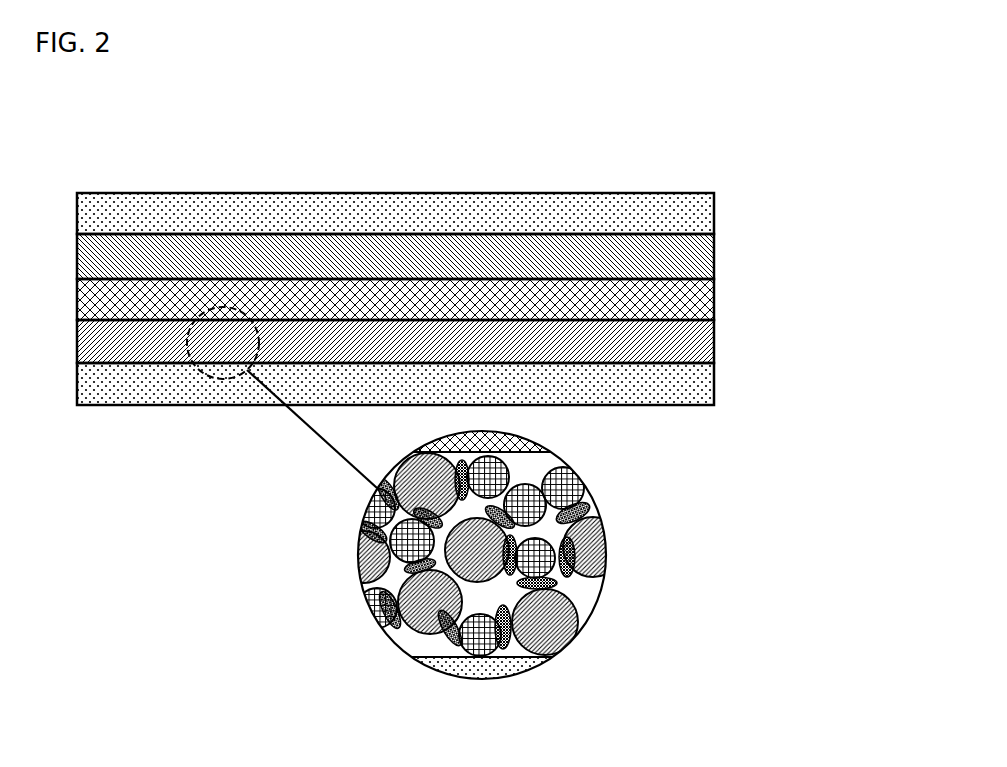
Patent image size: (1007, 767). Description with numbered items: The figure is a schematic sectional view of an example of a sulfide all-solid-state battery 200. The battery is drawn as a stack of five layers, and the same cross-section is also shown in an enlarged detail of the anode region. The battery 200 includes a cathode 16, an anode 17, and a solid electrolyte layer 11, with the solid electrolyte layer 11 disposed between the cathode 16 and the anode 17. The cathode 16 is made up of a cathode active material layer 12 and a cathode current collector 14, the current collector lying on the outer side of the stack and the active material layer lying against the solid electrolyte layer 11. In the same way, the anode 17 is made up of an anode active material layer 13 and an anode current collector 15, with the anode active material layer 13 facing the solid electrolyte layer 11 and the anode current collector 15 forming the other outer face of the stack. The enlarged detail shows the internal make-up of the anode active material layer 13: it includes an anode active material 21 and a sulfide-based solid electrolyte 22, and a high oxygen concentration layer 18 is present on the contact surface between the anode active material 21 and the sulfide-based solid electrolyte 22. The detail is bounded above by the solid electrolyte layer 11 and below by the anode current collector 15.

The sulfide all-solid-state battery 200 is at (76, 152).
The solid electrolyte layer 11 is at (714, 297).
The cathode active material layer 12 is at (714, 255).
The anode active material layer 13 is at (714, 339).
The cathode current collector 14 is at (714, 212).
The anode current collector 15 is at (439, 538).
The cathode 16 is at (473, 236).
The anode 17 is at (477, 517).
The high oxygen concentration layer 18 is at (598, 508).
The anode active material 21 is at (608, 553).
The sulfide-based solid electrolyte 22 is at (590, 482).